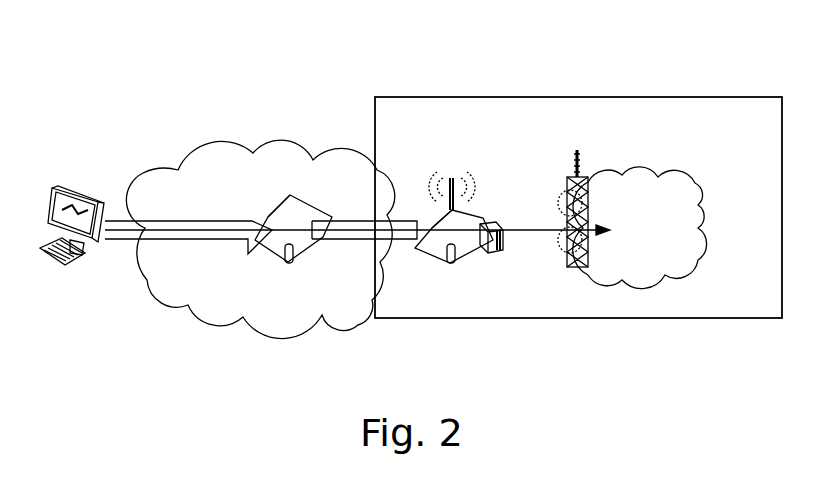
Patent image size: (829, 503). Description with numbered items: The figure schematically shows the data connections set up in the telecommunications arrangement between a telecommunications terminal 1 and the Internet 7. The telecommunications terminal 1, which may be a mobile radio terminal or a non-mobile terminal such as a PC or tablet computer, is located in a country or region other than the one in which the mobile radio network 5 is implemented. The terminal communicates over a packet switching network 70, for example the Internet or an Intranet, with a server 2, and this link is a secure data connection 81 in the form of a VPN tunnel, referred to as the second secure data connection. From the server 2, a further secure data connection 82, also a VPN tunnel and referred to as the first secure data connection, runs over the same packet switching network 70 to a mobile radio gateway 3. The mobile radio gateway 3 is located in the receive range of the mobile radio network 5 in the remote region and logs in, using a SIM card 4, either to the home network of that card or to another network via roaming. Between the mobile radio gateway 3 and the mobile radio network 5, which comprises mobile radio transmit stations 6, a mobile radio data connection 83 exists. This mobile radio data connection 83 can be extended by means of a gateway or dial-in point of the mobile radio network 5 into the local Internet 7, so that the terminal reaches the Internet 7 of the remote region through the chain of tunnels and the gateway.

The telecommunications terminal 1 is at (86, 178).
The server 2 is at (296, 192).
The mobile radio gateway 3 is at (475, 211).
The SIM card 4 is at (490, 254).
The mobile radio network 5 is at (597, 97).
The mobile radio transmit station 6 is at (583, 176).
The Internet 7 is at (702, 202).
The packet switching network 70 is at (157, 298).
The second secure data connection 81 is at (200, 238).
The first secure data connection 82 is at (388, 240).
The mobile radio data connection 83 is at (526, 233).